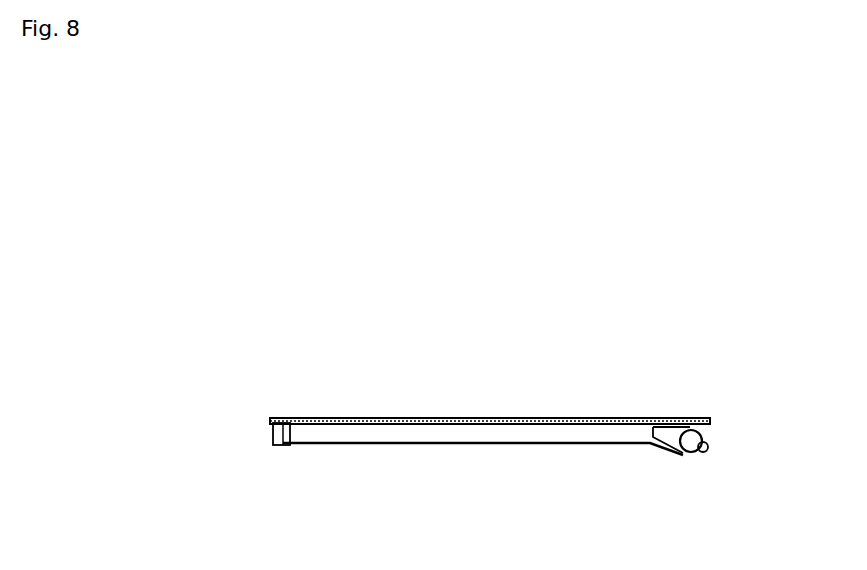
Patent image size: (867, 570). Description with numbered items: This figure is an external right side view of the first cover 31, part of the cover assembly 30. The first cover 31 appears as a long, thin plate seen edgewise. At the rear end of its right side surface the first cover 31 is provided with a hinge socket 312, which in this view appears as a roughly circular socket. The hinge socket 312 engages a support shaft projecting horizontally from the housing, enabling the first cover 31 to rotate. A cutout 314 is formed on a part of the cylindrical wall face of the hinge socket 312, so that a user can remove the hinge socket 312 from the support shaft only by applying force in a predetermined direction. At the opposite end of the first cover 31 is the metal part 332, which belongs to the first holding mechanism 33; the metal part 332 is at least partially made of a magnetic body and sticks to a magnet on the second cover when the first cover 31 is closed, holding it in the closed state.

The first cover 31 is at (523, 420).
The sheet conveying guide 30 is at (490, 385).
The hinge socket 312 is at (698, 437).
The cutout 314 is at (710, 450).
The metal part 332 is at (287, 446).
The first holding mechanism 33 is at (287, 486).